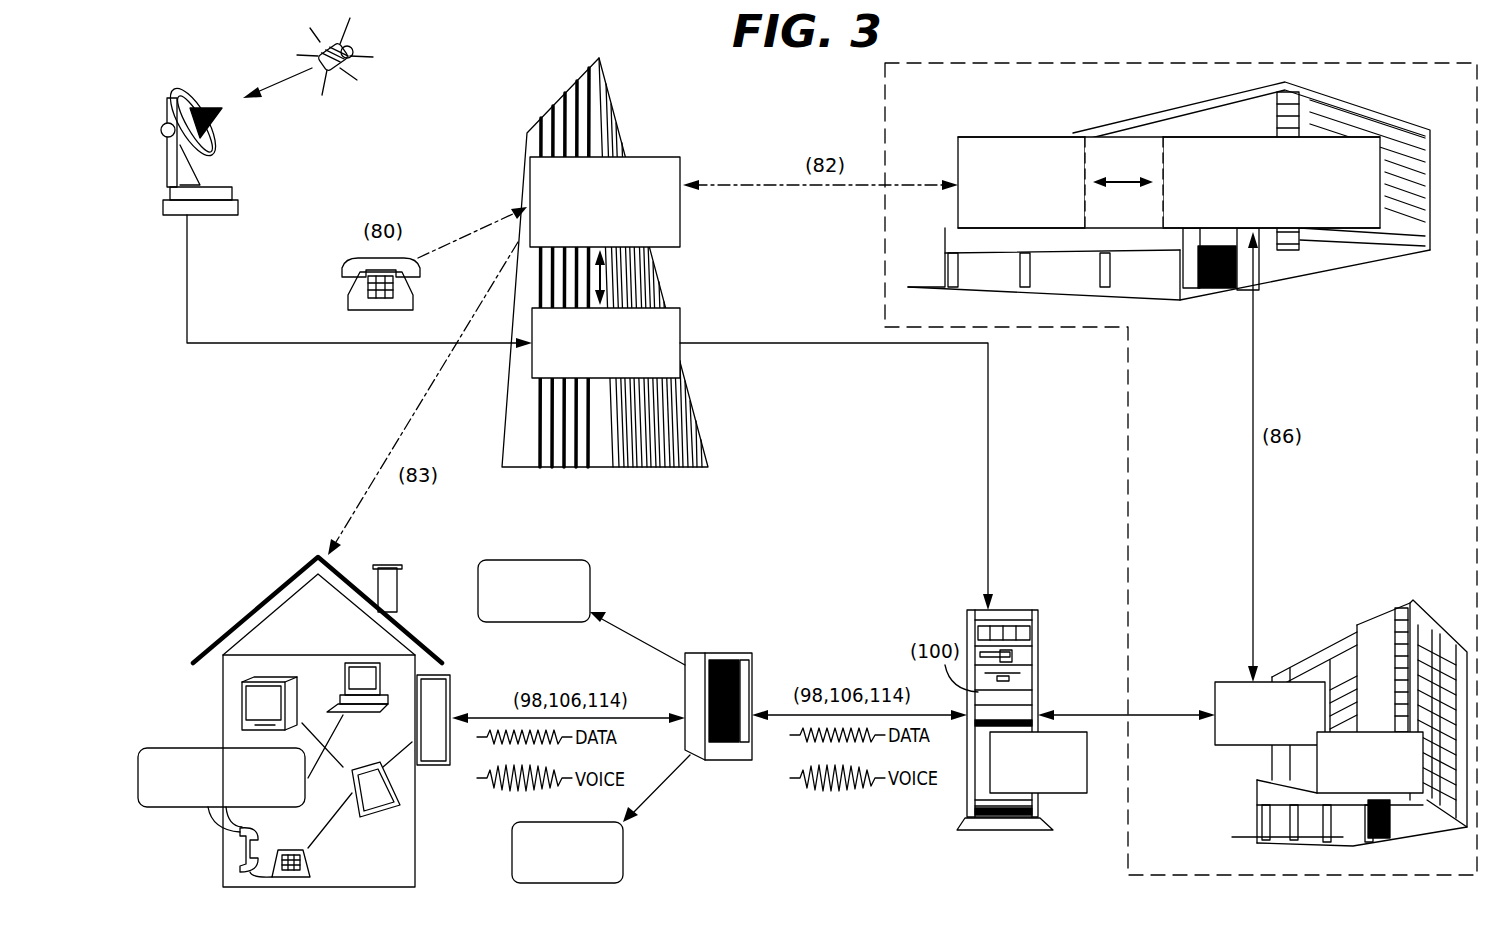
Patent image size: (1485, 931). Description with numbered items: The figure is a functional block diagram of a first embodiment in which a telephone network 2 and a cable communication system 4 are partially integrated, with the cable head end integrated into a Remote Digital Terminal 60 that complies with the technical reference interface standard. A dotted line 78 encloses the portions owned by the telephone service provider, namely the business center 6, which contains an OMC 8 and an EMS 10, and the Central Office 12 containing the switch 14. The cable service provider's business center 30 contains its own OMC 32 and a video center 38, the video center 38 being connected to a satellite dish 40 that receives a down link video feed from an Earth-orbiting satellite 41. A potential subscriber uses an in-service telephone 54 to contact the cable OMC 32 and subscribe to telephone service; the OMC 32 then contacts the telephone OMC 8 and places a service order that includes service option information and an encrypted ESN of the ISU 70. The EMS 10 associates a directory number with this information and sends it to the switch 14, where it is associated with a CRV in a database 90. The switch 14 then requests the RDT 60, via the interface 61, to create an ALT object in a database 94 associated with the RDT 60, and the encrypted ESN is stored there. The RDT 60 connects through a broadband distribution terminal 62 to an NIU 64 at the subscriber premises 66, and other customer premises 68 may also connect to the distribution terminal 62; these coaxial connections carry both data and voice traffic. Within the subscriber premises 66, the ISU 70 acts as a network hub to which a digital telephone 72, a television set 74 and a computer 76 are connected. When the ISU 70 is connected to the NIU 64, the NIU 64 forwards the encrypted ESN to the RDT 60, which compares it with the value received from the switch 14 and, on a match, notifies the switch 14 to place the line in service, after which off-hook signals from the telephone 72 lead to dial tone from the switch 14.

The telephone network 2 is at (1043, 112).
The cable communication system 4 is at (420, 125).
The business center 6 is at (1408, 125).
The OMC 8 is at (963, 137).
The EMS 10 is at (1207, 137).
The Central Office 12 is at (1393, 612).
The switch 14 is at (1247, 748).
The business center 30 is at (572, 88).
The OMC 32 is at (682, 163).
The video center 38 is at (683, 350).
The satellite dish 40 is at (238, 195).
The Earth-orbiting satellite 41 is at (336, 80).
The in-service telephone 54 is at (350, 297).
The integrated head end and TR-303 compliant RDT 60 is at (1012, 610).
The TR-303 interface 61 is at (1094, 719).
The broadband distribution terminal 62 is at (732, 653).
The NIU 64 is at (451, 690).
The subscriber premises 66 is at (420, 642).
The other customer premises 68 is at (590, 572).
The ISU 70 is at (400, 803).
The digital telephone 72 is at (240, 852).
The television set 74 is at (242, 702).
The computer 76 is at (347, 684).
The dotted line 78 is at (1340, 62).
The database 90 is at (1372, 732).
The database 94 is at (1067, 795).